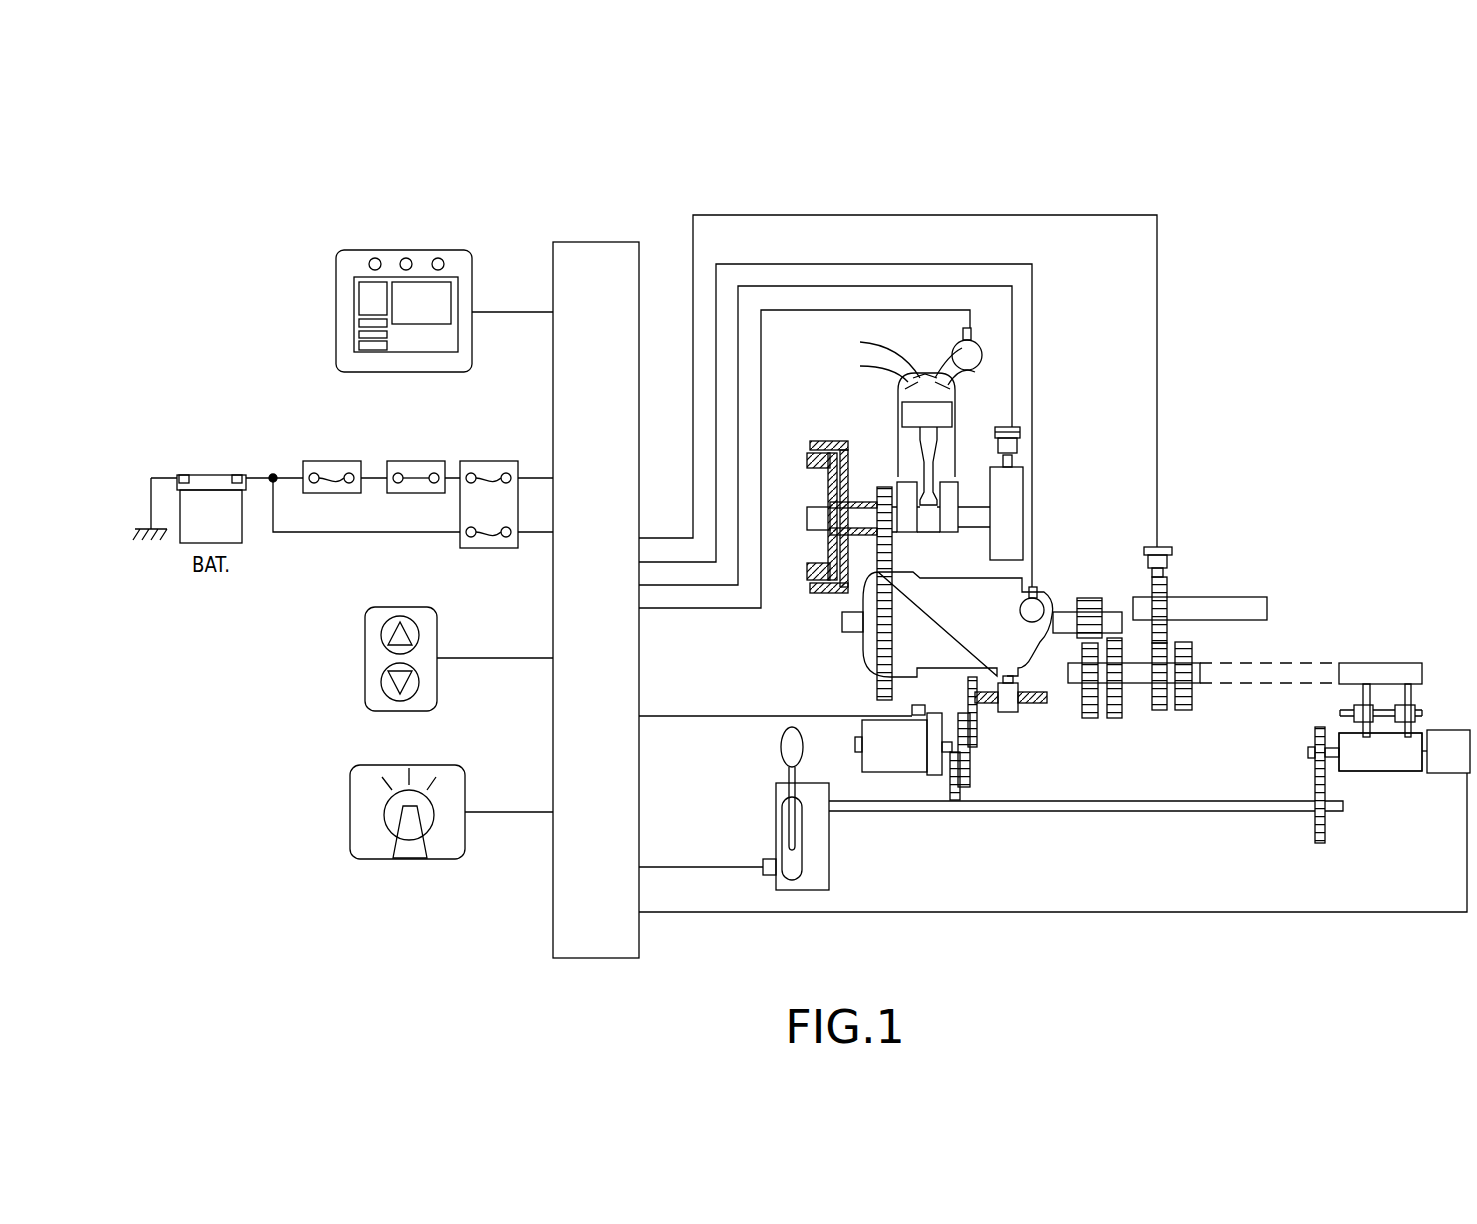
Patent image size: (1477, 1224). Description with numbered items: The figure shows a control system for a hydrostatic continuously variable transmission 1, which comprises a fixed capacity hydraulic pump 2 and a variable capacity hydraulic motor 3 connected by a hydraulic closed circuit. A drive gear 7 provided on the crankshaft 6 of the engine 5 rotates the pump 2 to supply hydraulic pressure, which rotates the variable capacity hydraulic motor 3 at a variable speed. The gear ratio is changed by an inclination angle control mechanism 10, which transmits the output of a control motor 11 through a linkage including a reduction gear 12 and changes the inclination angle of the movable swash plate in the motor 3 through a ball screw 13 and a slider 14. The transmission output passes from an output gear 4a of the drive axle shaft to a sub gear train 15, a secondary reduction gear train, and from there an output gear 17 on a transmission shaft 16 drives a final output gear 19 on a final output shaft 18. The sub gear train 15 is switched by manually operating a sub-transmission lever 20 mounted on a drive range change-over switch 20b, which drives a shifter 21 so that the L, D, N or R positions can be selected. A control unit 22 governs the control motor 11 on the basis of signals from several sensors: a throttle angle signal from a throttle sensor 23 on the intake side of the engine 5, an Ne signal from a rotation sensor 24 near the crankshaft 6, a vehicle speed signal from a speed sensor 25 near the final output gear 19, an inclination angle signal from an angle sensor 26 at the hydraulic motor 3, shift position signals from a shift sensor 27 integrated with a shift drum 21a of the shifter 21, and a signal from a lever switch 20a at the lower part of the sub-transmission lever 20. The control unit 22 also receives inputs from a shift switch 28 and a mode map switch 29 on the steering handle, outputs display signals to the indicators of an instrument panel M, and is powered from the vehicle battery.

The hydrostatic continuously variable transmission 1 is at (926, 519).
The fixed capacity hydraulic pump 2 is at (870, 660).
The variable capacity hydraulic motor 3 is at (958, 585).
The output gear 4a is at (1090, 597).
The engine 5 is at (897, 405).
The crankshaft 6 is at (967, 510).
The drive gear 7 is at (883, 486).
The inclination angle control mechanism 10 is at (1149, 678).
The control motor 11 is at (898, 760).
The reduction gear 12 is at (968, 778).
The ball screw 13 is at (1040, 708).
The slider 14 is at (1007, 715).
The sub gear train 15 is at (1140, 712).
The transmission shaft 16 is at (1200, 672).
The output gear 17 is at (1161, 712).
The final output shaft 18 is at (1265, 610).
The final output gear 19 is at (1170, 588).
The sub-transmission lever 20 is at (756, 817).
The lever switch 20a is at (768, 878).
The drive range change-over switch 20b is at (776, 812).
The shifter 21 is at (1381, 733).
The shift drum 21a is at (1405, 760).
The control unit 22 is at (585, 244).
The throttle sensor 23 is at (985, 360).
The rotation sensor 24 is at (1015, 445).
The speed sensor 25 is at (1168, 546).
The angle sensor 26 is at (1040, 595).
The shift sensor 27 is at (1448, 732).
The shift switch 28 is at (365, 657).
The mode map switch 29 is at (350, 812).
The instrument panel M is at (338, 290).